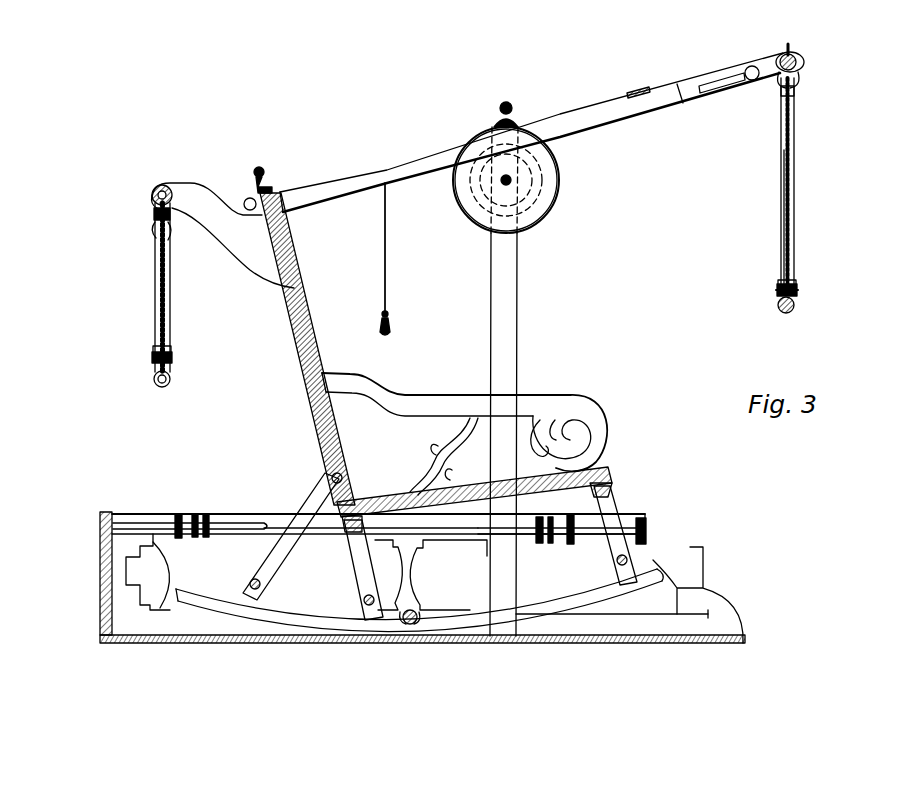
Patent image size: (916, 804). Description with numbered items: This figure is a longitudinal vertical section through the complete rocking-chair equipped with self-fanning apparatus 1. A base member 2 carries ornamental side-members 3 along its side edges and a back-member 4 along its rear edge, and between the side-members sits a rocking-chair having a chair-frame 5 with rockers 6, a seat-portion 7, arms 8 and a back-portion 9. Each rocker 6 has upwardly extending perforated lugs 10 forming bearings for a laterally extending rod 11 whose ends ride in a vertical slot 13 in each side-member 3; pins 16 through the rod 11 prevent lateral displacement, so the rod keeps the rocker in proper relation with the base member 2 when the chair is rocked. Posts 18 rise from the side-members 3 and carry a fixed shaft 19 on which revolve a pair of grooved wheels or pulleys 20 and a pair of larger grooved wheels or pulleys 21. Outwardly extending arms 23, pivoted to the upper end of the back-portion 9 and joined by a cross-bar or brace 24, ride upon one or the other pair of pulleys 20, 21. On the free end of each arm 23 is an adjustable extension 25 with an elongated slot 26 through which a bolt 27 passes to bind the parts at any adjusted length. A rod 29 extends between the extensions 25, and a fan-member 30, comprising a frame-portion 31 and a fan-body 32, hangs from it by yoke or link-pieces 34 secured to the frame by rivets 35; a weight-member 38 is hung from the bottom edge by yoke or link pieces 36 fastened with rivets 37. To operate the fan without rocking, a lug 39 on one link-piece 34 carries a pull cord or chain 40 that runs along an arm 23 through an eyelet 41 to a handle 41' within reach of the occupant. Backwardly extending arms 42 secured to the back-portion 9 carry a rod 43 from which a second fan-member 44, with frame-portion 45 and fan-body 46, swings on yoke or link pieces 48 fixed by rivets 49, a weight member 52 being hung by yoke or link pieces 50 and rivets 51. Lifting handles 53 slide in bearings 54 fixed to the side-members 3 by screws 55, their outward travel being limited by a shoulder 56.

The rocking-chair equipped with self-fanning apparatus 1 is at (278, 403).
The base member 2 is at (160, 642).
The side-members 3 is at (130, 550).
The back-member 4 is at (104, 578).
The chair-frame 5 is at (350, 556).
The rockers 6 is at (310, 617).
The seat-portion 7 is at (386, 498).
The arms 8 is at (403, 400).
The back-portion 9 is at (290, 233).
The perforated lugs 10 is at (417, 617).
The laterally extending rod 11 is at (424, 620).
The vertical slot 13 is at (408, 610).
The pins 16 is at (405, 623).
The posts 18 is at (520, 271).
The fixed shaft 19 is at (512, 180).
The grooved wheels or pulleys 20 is at (546, 185).
The grooved wheels or pulleys of larger diameter 21 is at (551, 199).
The outwardly extending arms 23 is at (354, 178).
The cross-bar or brace 24 is at (642, 88).
The adjustable extension 25 is at (805, 60).
The elongated slot 26 is at (720, 95).
The bolt 27 is at (752, 81).
The rod 29 is at (805, 64).
The fan-member 30 is at (796, 174).
The frame-portion 31 is at (781, 92).
The fan-body 32 is at (796, 223).
The yoke or link-pieces 34 is at (800, 72).
The rivets 35 is at (794, 82).
The yoke or link pieces 36 is at (798, 297).
The rivets 37 is at (799, 291).
The weight-member 38 is at (783, 312).
The lug 39 is at (791, 48).
The pull cord or chain 40 is at (762, 58).
The eyelet 41 is at (411, 217).
The handle 41' is at (407, 331).
The backwardly extending arms 42 is at (223, 235).
The rod 43 is at (151, 197).
The fan-member 44 is at (155, 274).
The frame-portion 45 is at (158, 220).
The fan-body 46 is at (170, 238).
The yoke or link pieces 48 is at (150, 205).
The rivets 49 is at (157, 228).
The yoke or link pieces 50 is at (154, 379).
The rivets 51 is at (173, 358).
The weight member 52 is at (158, 390).
The lifting handles 53 is at (125, 521).
The bearings 54 is at (696, 540).
The screws 55 is at (205, 516).
The shoulder 56 is at (178, 515).